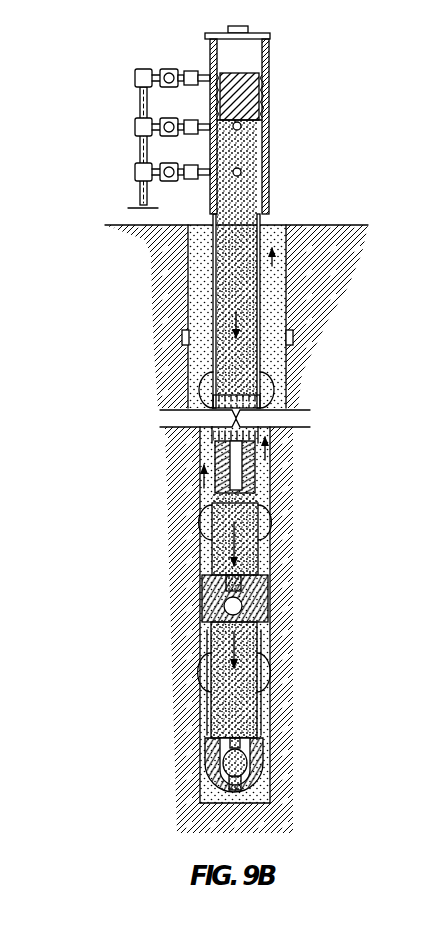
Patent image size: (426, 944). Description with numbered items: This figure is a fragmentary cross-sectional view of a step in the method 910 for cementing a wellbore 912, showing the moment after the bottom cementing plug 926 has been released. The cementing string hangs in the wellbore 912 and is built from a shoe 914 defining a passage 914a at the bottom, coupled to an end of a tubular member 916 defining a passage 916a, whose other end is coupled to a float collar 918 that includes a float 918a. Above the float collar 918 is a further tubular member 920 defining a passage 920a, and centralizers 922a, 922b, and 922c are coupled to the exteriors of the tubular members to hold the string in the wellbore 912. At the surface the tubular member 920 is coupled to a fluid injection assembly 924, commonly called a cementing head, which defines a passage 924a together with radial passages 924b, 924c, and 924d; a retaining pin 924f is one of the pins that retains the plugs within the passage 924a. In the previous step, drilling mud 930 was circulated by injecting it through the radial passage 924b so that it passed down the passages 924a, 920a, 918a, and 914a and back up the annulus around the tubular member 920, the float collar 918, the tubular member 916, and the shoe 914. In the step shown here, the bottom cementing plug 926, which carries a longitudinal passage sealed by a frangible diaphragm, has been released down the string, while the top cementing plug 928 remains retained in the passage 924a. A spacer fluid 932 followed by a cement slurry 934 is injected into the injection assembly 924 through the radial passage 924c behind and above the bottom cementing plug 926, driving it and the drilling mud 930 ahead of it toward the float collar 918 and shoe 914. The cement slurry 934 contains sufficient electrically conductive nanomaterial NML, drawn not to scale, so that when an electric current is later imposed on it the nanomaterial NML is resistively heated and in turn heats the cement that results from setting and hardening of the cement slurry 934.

The method 910 is at (117, 121).
The wellbore 912 is at (212, 557).
The shoe 914 is at (206, 755).
The passage 914a is at (243, 762).
The tubular member 916 is at (257, 645).
The passage 916a is at (243, 708).
The float collar 918 is at (215, 612).
The float 918a is at (245, 598).
The tubular member 920 is at (213, 289).
The passage 920a is at (267, 232).
The centralizer 922a is at (206, 660).
The centralizer 922b is at (266, 516).
The centralizer 922c is at (206, 380).
The fluid injection assembly 924 is at (268, 65).
The passage 924a is at (248, 182).
The radial passage 924b is at (206, 167).
The radial passage 924c is at (206, 121).
The radial passage 924d is at (206, 73).
The retaining pin 924f is at (259, 124).
The bottom cementing plug 926 is at (250, 482).
The top cementing plug 928 is at (254, 97).
The drilling mud 930 is at (203, 484).
The spacer fluid 932 is at (218, 402).
The cement slurry 934 is at (235, 322).
The nanomaterial NML is at (221, 343).